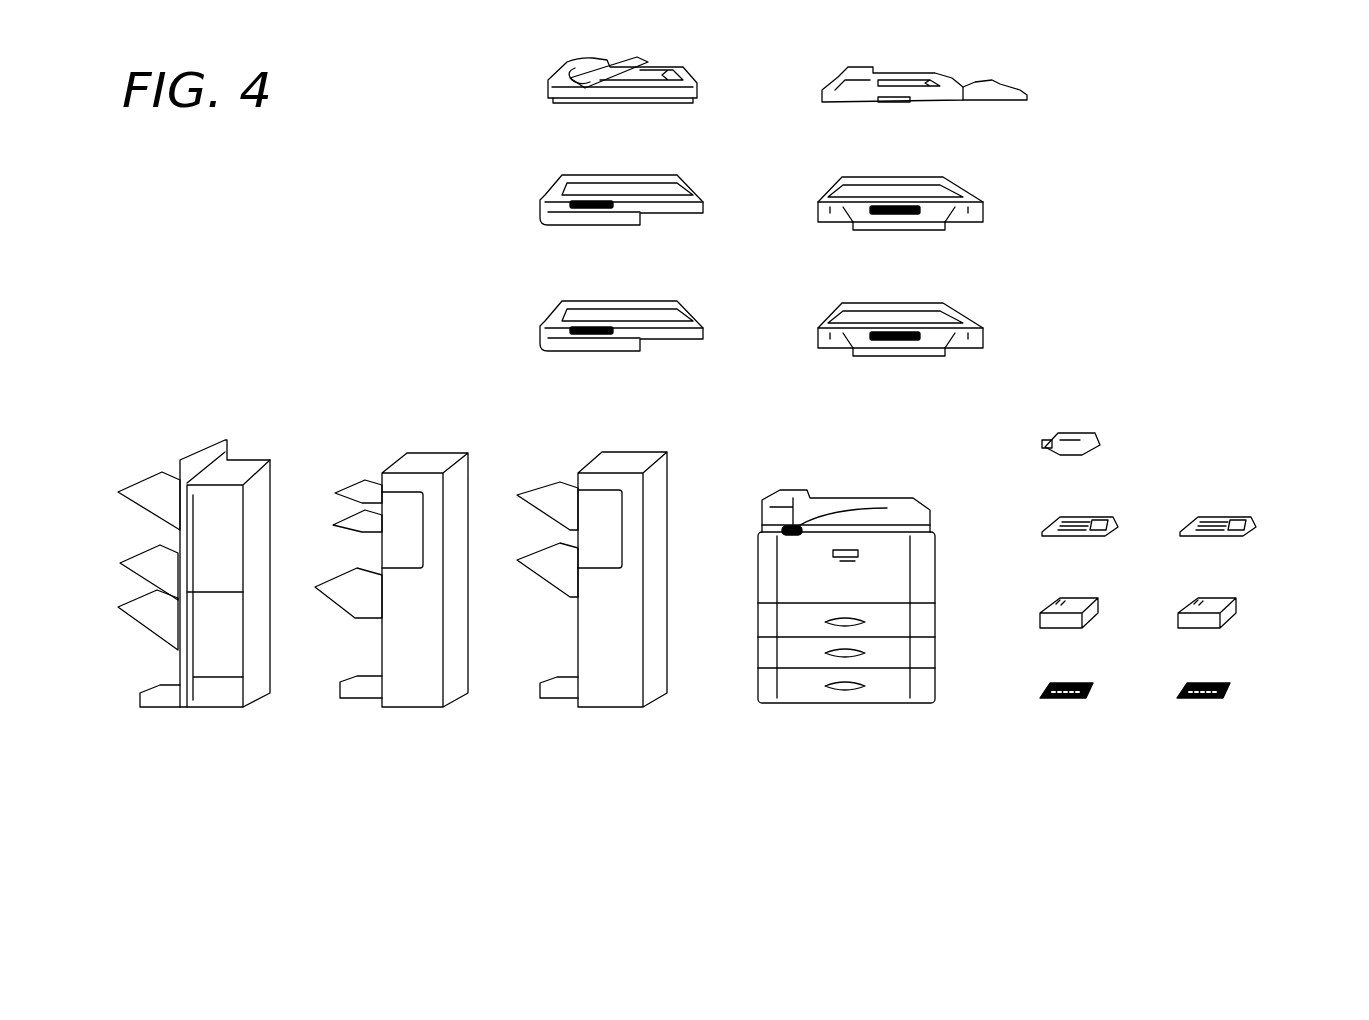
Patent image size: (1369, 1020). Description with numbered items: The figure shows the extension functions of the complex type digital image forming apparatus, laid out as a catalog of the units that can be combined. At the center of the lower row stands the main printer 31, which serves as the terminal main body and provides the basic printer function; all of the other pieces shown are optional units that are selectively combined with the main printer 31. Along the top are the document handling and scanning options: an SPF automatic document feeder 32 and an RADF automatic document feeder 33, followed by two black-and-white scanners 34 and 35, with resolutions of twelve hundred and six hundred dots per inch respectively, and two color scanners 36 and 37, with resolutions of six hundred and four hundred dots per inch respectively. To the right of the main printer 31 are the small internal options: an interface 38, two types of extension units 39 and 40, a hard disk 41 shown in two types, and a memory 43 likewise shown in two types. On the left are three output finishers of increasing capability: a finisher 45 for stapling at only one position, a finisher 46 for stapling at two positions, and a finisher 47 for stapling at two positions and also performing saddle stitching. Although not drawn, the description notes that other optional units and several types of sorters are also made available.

The main printer 31 is at (770, 703).
The SPF automatic document feeder 32 is at (552, 103).
The RADF automatic document feeder 33 is at (837, 103).
The black-and-white scanner 34 is at (545, 192).
The black-and-white scanner 35 is at (545, 318).
The color scanner 36 is at (820, 192).
The color scanner 37 is at (818, 318).
The interface 38 is at (1097, 440).
The extension unit 39 is at (1055, 520).
The extension unit 40 is at (1193, 520).
The hard disk 41 is at (1040, 607).
The memory 43 is at (1040, 684).
The finisher 45 is at (540, 693).
The finisher 46 is at (340, 692).
The finisher 47 is at (137, 688).